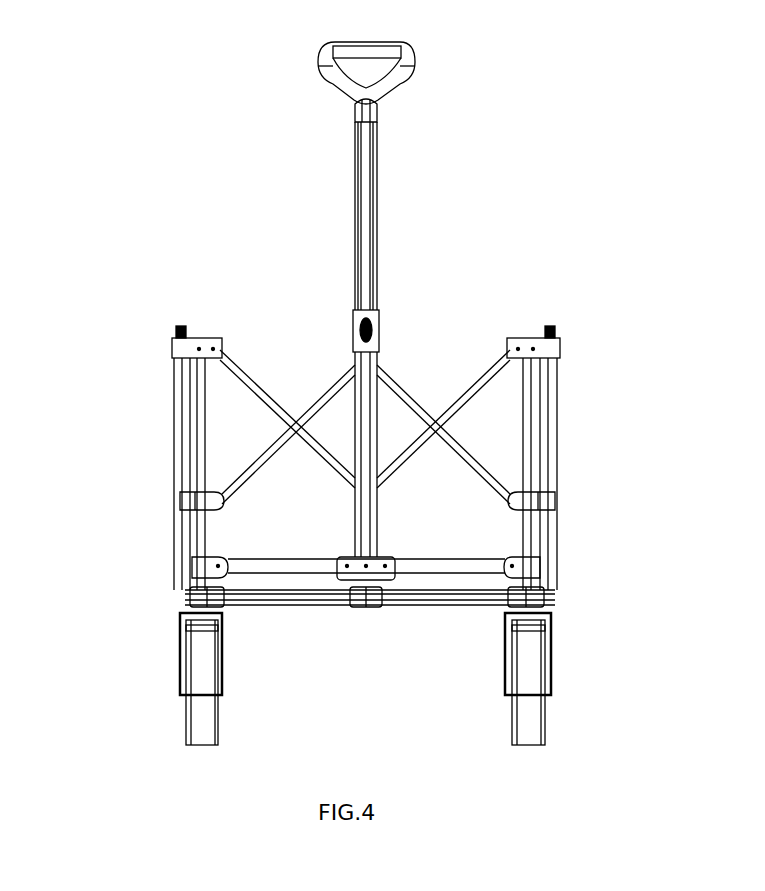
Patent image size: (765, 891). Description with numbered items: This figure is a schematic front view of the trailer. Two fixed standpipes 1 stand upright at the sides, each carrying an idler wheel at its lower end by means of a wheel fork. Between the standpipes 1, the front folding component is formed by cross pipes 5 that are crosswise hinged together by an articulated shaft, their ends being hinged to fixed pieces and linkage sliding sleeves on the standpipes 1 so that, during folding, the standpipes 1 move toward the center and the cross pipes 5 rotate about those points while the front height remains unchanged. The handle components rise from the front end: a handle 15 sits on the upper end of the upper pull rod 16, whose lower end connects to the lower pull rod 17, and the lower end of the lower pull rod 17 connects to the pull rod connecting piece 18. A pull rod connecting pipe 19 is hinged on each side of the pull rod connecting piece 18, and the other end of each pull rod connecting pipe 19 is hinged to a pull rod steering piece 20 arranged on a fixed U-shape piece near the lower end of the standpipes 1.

The fixed standpipes 1 is at (205, 425).
The cross pipes 5 is at (408, 384).
The handle 15 is at (420, 68).
The upper pull rod 16 is at (362, 212).
The lower pull rod 17 is at (368, 445).
The pull rod connecting piece 18 is at (376, 602).
The pull rod connecting pipes 19 is at (280, 574).
The pull rod steering pieces 20 is at (524, 570).